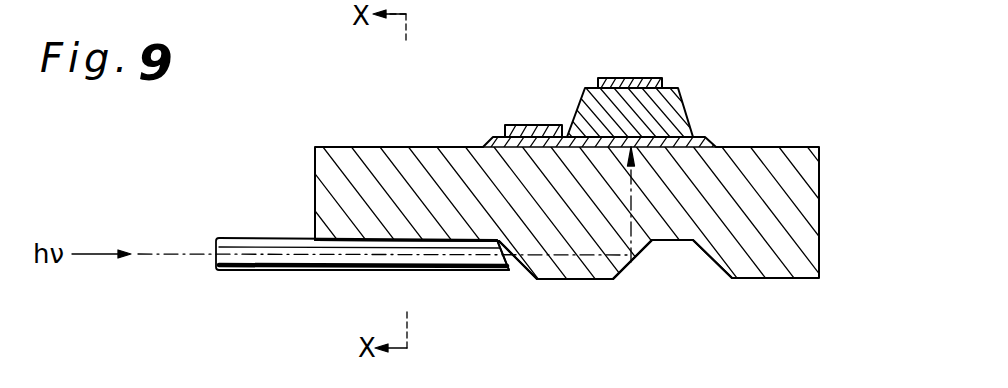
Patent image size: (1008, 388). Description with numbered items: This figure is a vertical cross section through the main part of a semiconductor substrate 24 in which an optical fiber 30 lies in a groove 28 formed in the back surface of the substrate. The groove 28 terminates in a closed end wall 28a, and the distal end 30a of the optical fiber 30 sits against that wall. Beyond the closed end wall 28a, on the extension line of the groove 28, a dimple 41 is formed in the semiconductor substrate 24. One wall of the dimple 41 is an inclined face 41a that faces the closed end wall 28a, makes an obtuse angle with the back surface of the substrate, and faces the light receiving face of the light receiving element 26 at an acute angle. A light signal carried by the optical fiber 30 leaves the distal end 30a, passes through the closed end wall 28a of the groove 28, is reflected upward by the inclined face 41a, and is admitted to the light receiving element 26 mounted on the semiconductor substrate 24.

The semiconductor substrate 24 is at (825, 230).
The light receiving element 26 is at (702, 90).
The groove 28 is at (417, 238).
The closed end wall 28a is at (505, 250).
The optical fiber 30 is at (288, 254).
The distal end 30a is at (510, 270).
The dimple 41 is at (672, 250).
The inclined face 41a is at (632, 263).